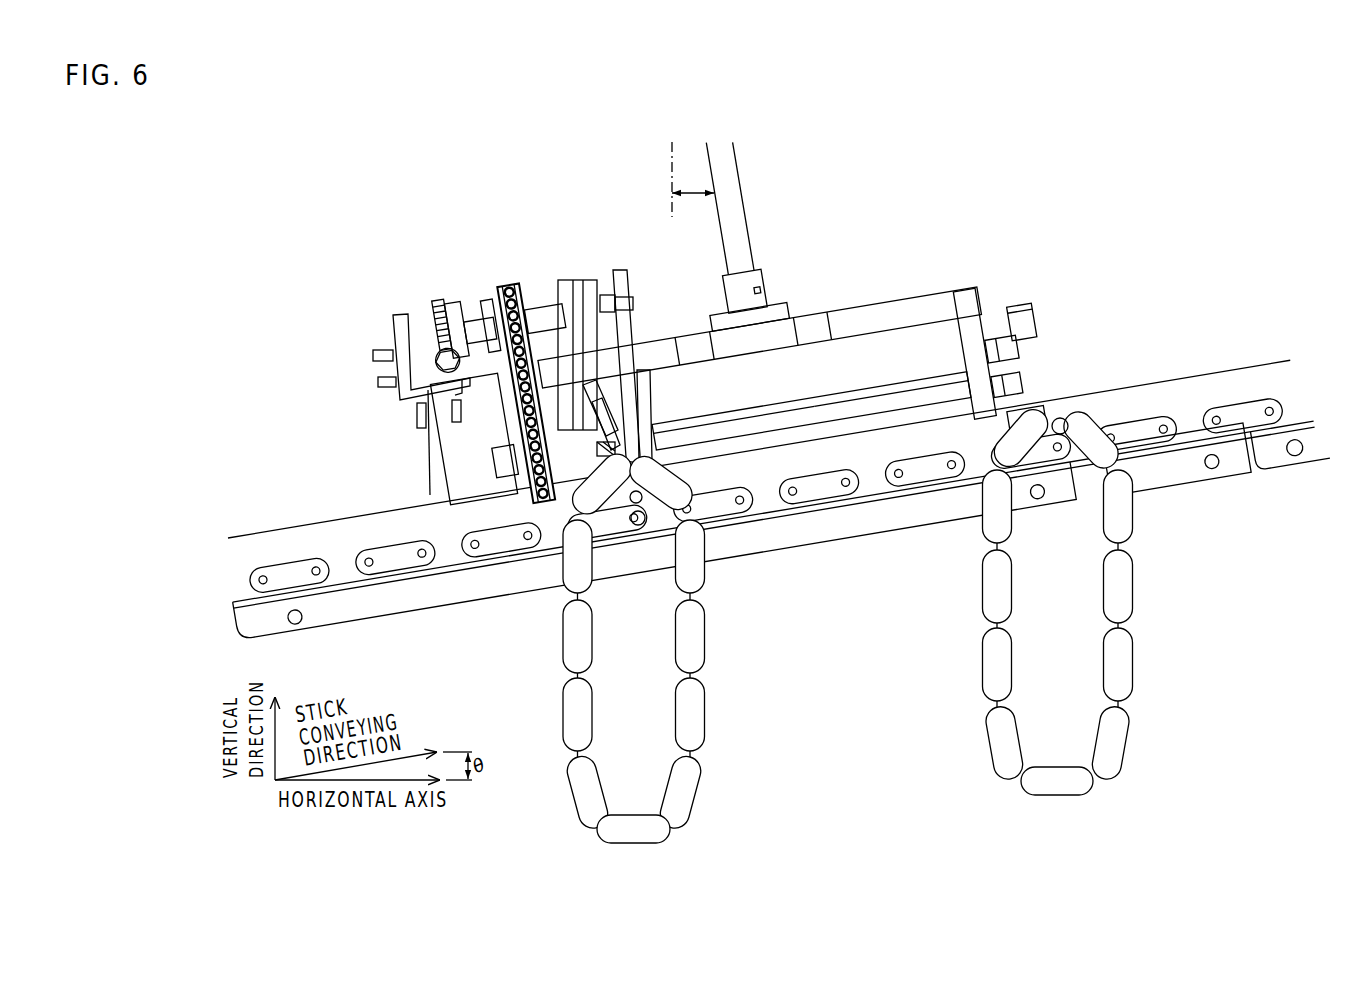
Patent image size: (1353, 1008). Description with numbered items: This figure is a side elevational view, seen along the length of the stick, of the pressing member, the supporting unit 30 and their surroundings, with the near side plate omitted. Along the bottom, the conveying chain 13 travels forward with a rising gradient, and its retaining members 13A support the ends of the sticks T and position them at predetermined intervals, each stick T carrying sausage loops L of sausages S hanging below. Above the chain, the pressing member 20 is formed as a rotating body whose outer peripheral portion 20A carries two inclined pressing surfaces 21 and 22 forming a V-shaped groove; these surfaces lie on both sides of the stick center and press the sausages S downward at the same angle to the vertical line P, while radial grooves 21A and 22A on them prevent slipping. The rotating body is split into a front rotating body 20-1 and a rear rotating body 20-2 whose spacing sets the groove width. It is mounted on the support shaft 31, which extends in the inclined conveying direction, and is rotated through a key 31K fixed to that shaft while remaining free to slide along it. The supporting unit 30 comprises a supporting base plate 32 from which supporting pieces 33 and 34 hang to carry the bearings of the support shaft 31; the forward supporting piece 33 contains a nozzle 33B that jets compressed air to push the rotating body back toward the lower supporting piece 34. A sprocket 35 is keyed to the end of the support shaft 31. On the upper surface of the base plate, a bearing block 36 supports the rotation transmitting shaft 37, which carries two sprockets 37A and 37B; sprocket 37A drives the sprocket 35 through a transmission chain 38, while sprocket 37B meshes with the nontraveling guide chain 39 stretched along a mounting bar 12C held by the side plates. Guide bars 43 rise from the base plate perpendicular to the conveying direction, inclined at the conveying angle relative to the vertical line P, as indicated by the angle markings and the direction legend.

The supporting unit 30 is at (385, 182).
The conveying chain 13 is at (1190, 423).
The retaining member 13A is at (1023, 417).
The mounting bar 12C is at (398, 333).
The pressing member (rotating body) 20 is at (645, 388).
The outer peripheral portion 20A is at (570, 318).
The front rotating body 20-1 is at (763, 421).
The rear rotating body 20-2 is at (430, 493).
The pressing surface 21 is at (645, 400).
The radial grooves 21A is at (640, 432).
The pressing surface 22 is at (640, 375).
The radial grooves 22A is at (587, 400).
The support shaft 31 is at (812, 420).
The key 31K is at (895, 392).
The supporting base plate 32 is at (853, 318).
The supporting piece 33 is at (983, 317).
The nozzle 33B is at (962, 353).
The supporting piece 34 is at (520, 300).
The sprocket 35 is at (507, 460).
The bearing block 36 is at (550, 312).
The rotation transmitting shaft 37 is at (565, 322).
The sprocket 37A is at (440, 300).
The sprocket (meshing wheel) 37B is at (440, 313).
The transmission chain 38 is at (517, 407).
The guide chain 39 is at (390, 367).
The guide bar 43 is at (720, 190).
The vertical line P is at (670, 168).
The sausage S is at (577, 509).
The stick T is at (638, 525).
The sausage loop L is at (710, 662).